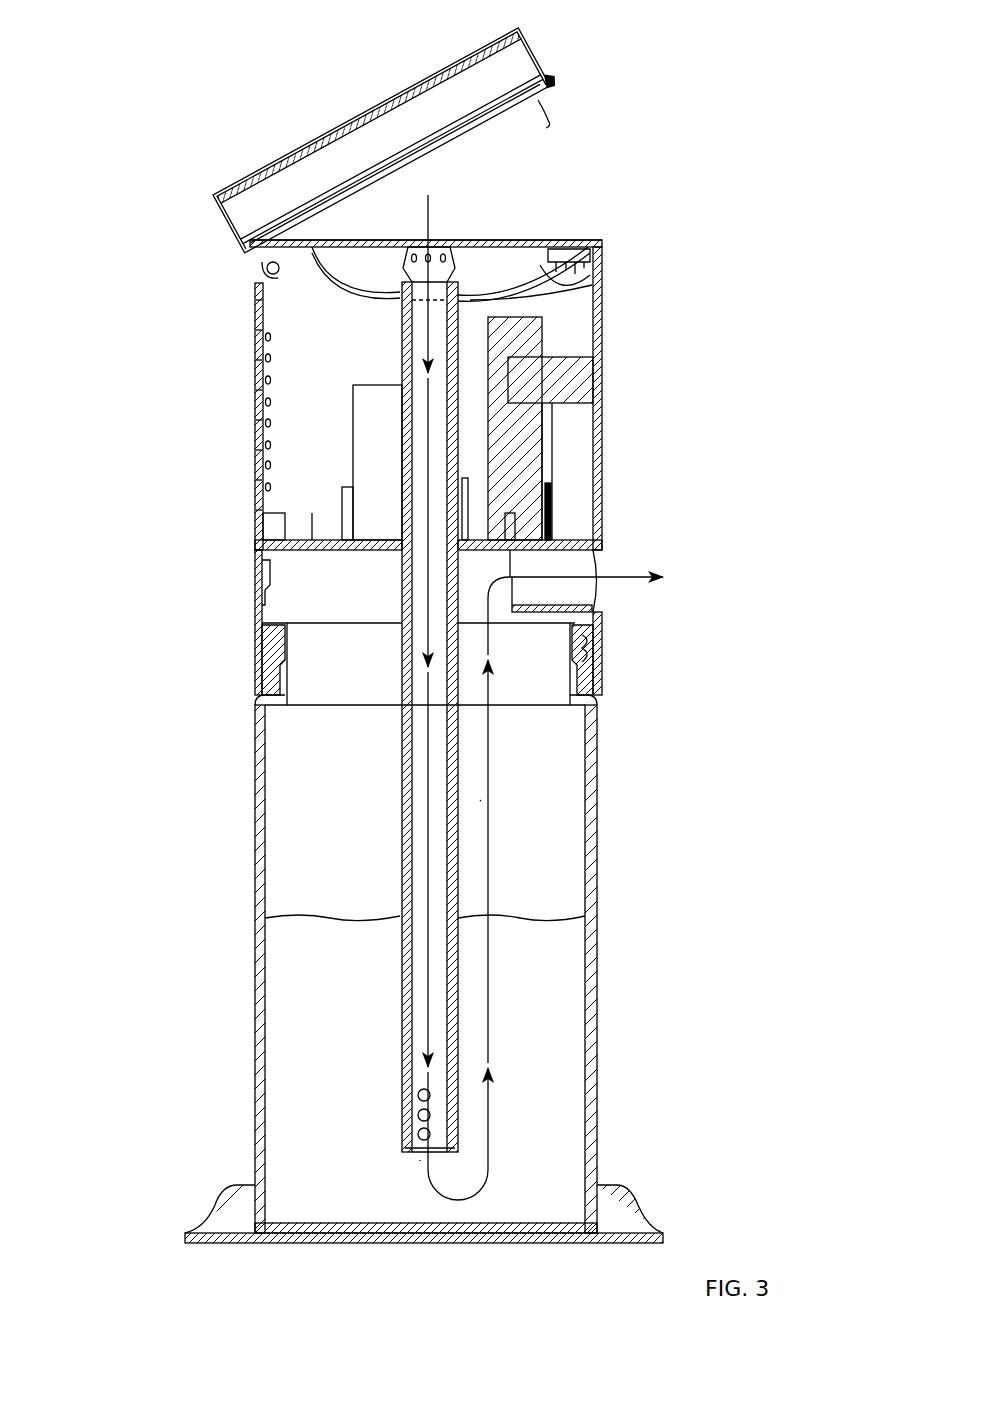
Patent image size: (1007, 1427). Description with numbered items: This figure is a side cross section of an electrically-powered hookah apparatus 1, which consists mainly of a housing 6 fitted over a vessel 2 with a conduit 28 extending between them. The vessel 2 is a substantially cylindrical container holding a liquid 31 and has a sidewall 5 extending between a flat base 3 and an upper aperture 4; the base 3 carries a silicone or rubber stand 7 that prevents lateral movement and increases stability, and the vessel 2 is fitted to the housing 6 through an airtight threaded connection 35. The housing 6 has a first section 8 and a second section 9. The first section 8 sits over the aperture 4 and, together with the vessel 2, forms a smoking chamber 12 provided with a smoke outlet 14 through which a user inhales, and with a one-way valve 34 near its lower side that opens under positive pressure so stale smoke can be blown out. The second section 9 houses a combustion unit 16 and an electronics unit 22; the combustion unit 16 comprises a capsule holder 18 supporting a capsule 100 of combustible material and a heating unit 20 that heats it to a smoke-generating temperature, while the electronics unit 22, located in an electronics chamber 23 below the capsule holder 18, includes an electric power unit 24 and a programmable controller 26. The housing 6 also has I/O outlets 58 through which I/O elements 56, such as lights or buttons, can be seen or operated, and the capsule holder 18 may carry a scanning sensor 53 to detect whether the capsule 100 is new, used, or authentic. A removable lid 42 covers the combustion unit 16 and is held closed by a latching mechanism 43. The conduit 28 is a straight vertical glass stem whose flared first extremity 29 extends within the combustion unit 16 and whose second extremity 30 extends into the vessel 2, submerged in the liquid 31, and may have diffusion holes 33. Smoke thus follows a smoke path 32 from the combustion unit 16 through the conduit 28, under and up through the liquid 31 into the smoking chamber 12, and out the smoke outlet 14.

The hookah apparatus 1 is at (185, 110).
The vessel 2 is at (359, 964).
The base 3 is at (500, 1243).
The aperture 4 is at (313, 620).
The sidewall 5 is at (258, 963).
The housing 6 is at (326, 395).
The stand 7 is at (620, 1215).
The first section 8 is at (384, 621).
The second section 9 is at (200, 330).
The smoking chamber 12 is at (280, 843).
The smoke outlet 14 is at (580, 562).
The combustion unit 16 is at (620, 158).
The capsule holder 18 is at (575, 320).
The heating unit 20 is at (478, 148).
The electronics unit 22 is at (570, 452).
The electronics chamber 23 is at (297, 315).
The electric power unit 24 is at (537, 343).
The programmable controller 26 is at (547, 470).
The conduit 28 is at (402, 722).
The first extremity 29 is at (445, 275).
The second extremity 30 is at (404, 1148).
The liquid 31 is at (565, 967).
The smoke path 32 is at (488, 803).
The diffusion holes 33 is at (404, 1095).
The one-way valve 34 is at (257, 580).
The threaded connection 35 is at (598, 655).
The removable lid 42 is at (535, 56).
The latching mechanism 43 is at (545, 118).
The scanning sensor 53 is at (555, 285).
The I/O elements 56 is at (258, 415).
The I/O outlets 58 is at (258, 380).
The capsule 100 is at (360, 282).